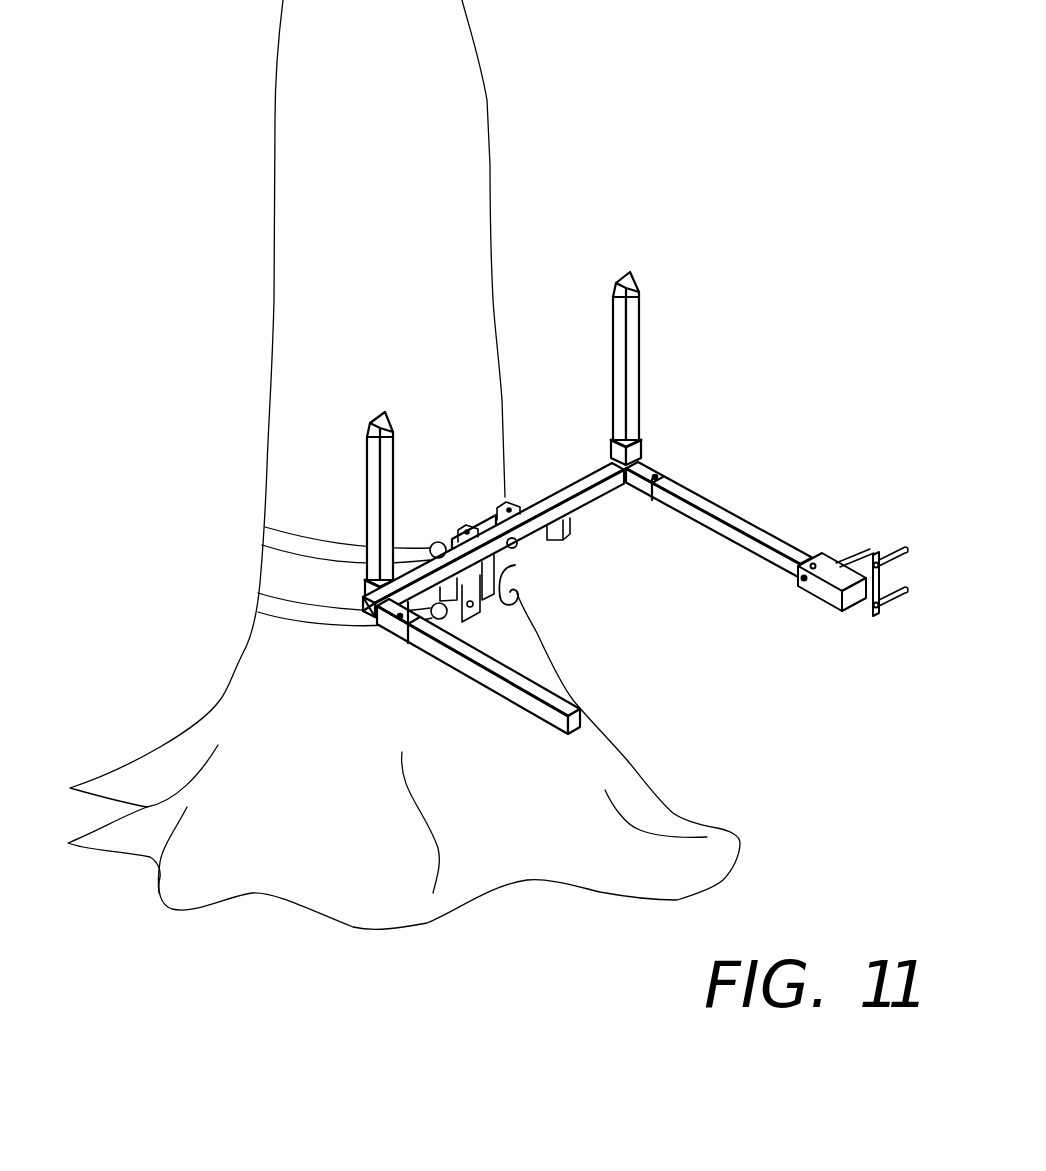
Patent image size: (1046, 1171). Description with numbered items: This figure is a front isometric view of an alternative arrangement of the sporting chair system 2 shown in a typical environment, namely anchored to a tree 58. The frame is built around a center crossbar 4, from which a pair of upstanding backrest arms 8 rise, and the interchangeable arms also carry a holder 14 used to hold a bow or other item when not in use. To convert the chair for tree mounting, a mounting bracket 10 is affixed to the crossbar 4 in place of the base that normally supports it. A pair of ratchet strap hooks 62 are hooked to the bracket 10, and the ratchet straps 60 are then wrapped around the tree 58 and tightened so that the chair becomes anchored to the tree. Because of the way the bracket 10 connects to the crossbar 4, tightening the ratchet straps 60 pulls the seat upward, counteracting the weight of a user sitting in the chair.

The sporting chair system 2 is at (852, 205).
The center crossbar 4 is at (668, 436).
The backrest arm 8 is at (639, 312).
The mounting bracket 10 is at (520, 568).
The holder 14 is at (832, 562).
The tree 58 is at (490, 165).
The ratchet straps 60 is at (258, 593).
The ratchet strap hooks 62 is at (515, 592).